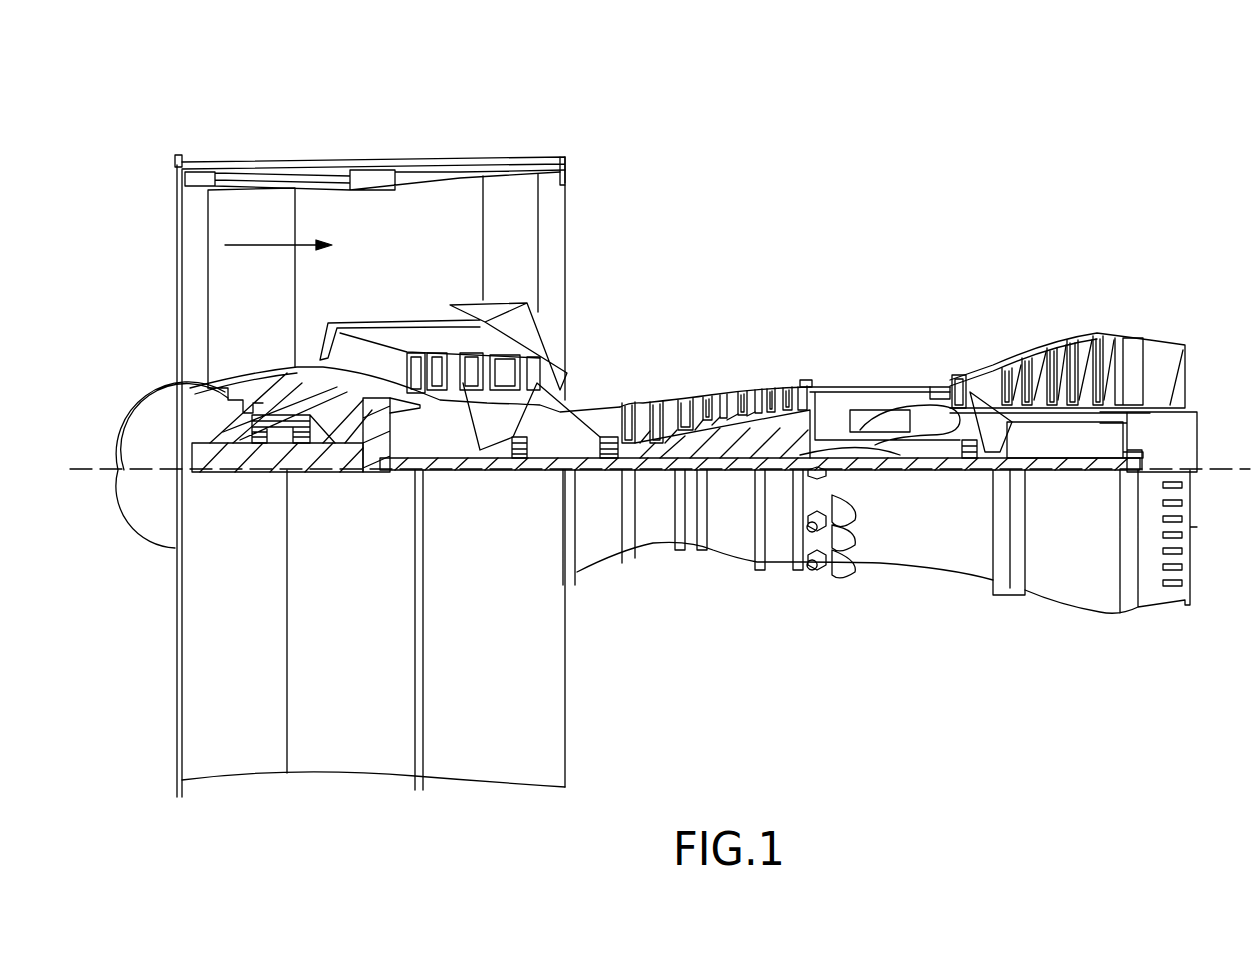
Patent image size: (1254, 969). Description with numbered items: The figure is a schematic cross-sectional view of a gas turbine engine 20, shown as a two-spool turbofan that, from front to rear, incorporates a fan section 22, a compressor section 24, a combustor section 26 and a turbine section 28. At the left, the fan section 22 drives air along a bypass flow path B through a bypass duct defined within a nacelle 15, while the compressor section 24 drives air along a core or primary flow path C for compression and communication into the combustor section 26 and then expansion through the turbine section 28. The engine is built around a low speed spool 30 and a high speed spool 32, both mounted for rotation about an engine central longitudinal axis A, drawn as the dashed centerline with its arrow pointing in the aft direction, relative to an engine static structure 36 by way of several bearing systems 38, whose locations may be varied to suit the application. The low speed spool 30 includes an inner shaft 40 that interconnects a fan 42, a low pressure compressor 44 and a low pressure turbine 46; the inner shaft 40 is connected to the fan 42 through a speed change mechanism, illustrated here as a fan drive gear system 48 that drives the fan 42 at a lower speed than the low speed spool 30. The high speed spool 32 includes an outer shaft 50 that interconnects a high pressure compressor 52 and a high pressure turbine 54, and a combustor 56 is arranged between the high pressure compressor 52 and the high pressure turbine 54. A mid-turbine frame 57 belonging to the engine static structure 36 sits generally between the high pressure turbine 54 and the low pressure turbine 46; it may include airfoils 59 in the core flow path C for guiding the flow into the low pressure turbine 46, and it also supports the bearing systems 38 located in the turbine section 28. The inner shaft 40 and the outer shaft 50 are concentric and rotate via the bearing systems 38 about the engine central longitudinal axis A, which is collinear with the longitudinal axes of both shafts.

The gas turbine engine 20 is at (885, 176).
The fan section 22 is at (288, 150).
The nacelle 15 is at (372, 180).
The compressor section 24 is at (609, 362).
The combustor section 26 is at (850, 350).
The turbine section 28 is at (1013, 315).
The low speed spool 30 is at (731, 513).
The high speed spool 32 is at (773, 428).
The engine static structure 36 is at (766, 564).
The bearing systems 38 is at (524, 470).
The inner shaft 40 is at (594, 480).
The fan 42 is at (265, 287).
The low pressure compressor 44 is at (497, 368).
The low pressure turbine 46 is at (1058, 362).
The fan drive gear system 48 is at (381, 455).
The outer shaft 50 is at (860, 454).
The high pressure compressor 52 is at (730, 403).
The high pressure turbine 54 is at (922, 394).
The combustor 56 is at (869, 419).
The mid-turbine frame 57 is at (975, 376).
The airfoils 59 is at (990, 430).
The engine central longitudinal axis A is at (1246, 462).
The bypass flow path B is at (259, 248).
The core flow path C is at (357, 352).